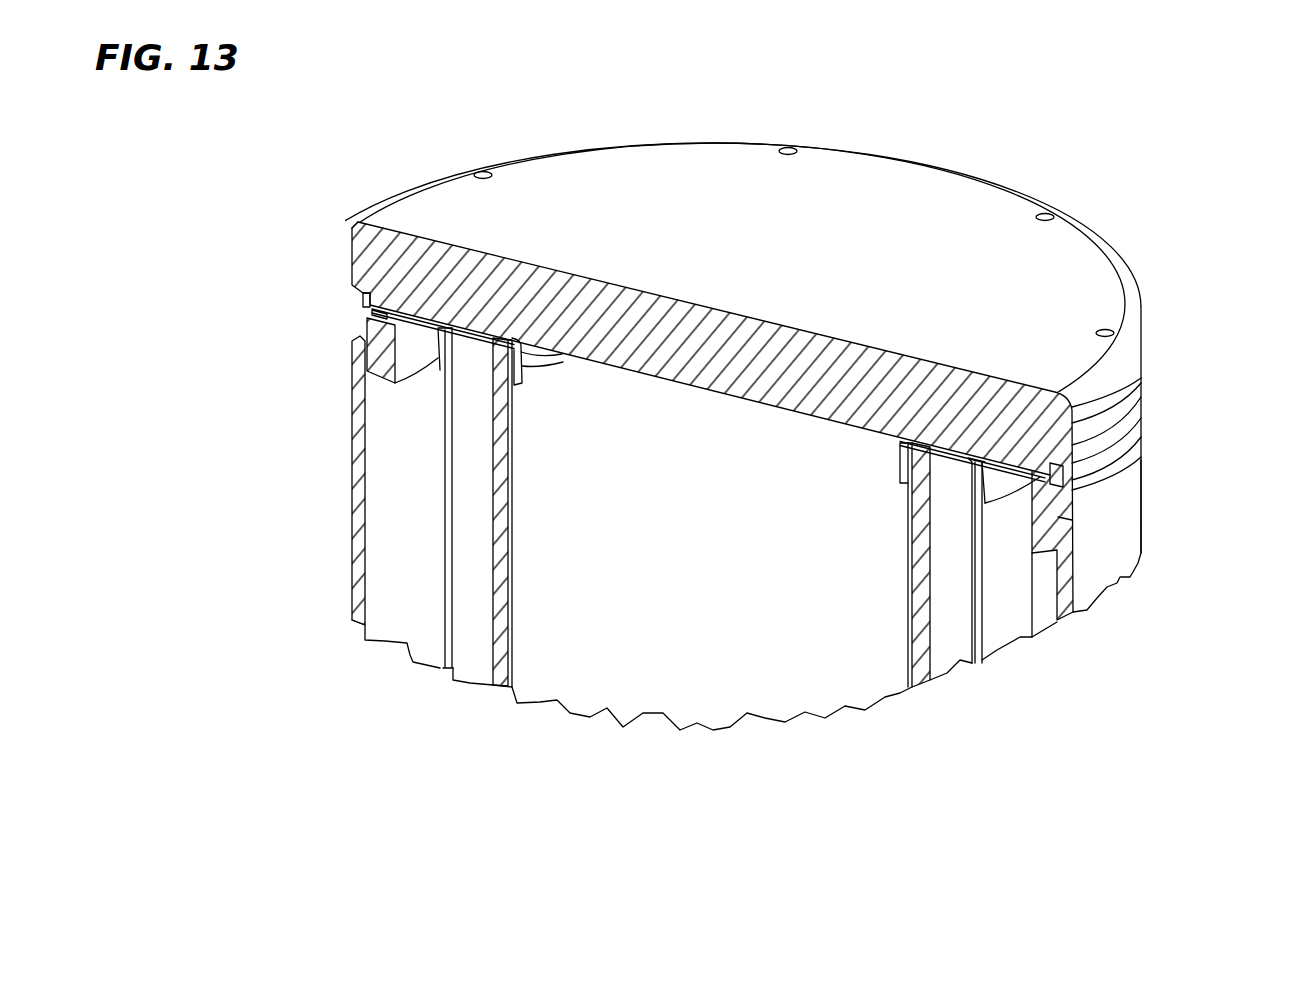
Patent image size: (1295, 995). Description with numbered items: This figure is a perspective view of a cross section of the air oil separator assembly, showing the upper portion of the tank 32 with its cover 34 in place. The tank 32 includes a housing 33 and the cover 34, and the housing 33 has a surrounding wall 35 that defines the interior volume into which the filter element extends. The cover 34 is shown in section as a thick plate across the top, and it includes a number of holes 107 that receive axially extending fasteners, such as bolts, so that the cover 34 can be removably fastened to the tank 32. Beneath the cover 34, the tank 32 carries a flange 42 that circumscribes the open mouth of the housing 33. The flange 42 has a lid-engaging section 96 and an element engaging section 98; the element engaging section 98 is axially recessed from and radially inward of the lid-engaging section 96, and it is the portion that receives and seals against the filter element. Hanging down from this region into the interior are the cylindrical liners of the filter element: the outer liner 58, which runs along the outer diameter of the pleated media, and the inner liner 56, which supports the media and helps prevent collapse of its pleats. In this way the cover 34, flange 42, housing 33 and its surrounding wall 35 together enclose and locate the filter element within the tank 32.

The cover 34 is at (417, 205).
The holes 107 is at (484, 170).
The lid-engaging section 96 is at (360, 296).
The element engaging section 98 is at (378, 317).
The flange 42 is at (1128, 420).
The tank 32 is at (1137, 473).
The housing 33 is at (1133, 507).
The surrounding wall 35 is at (1128, 542).
The outer liner 58 is at (447, 648).
The inner liner 56 is at (528, 670).